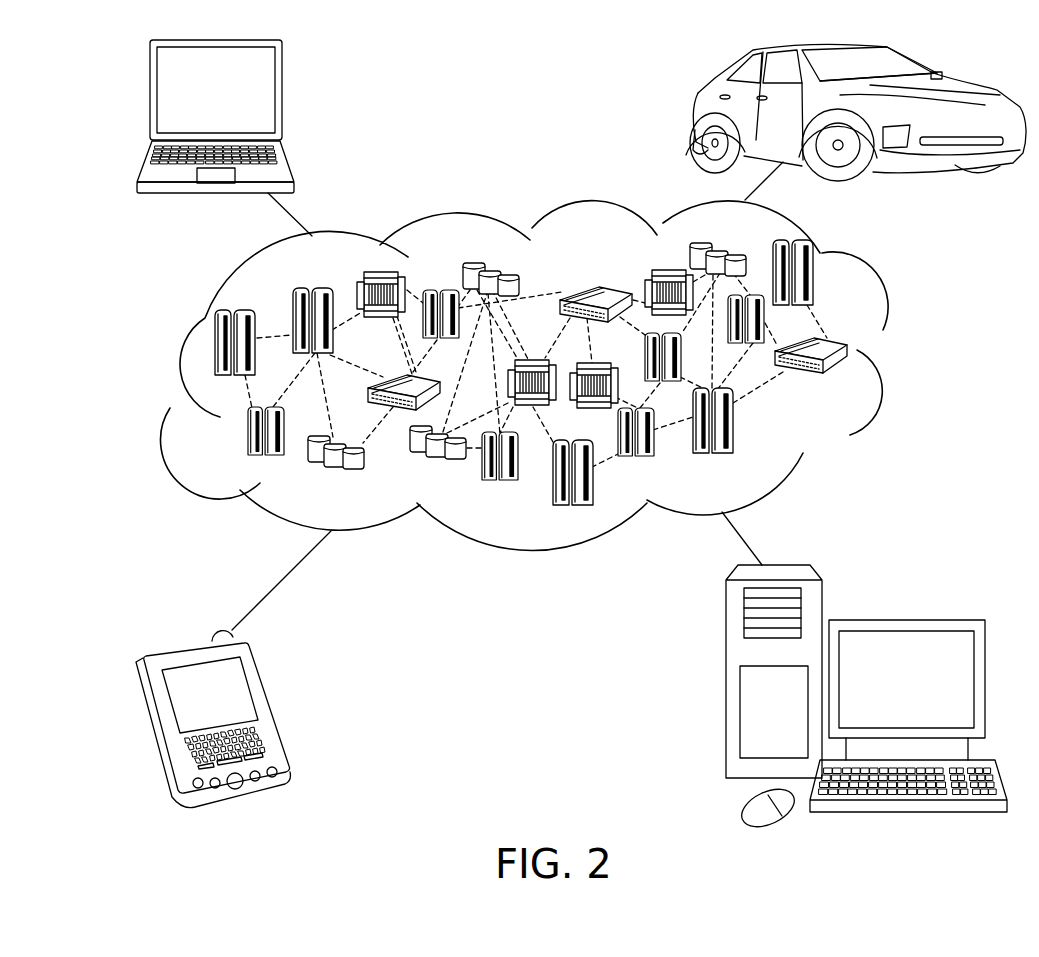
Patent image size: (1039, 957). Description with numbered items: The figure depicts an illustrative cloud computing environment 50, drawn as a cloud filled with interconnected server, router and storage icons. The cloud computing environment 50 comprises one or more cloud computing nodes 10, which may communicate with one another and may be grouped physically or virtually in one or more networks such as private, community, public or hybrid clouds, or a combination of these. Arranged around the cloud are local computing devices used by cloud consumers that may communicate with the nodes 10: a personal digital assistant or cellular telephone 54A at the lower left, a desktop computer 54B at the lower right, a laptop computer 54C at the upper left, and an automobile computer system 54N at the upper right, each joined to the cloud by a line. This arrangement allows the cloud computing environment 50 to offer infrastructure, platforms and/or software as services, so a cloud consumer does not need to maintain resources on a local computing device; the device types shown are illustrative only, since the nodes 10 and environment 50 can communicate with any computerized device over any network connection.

The cloud computing node 10 is at (849, 380).
The cloud computing environment 50 is at (561, 376).
The personal digital assistant or cellular telephone 54A is at (270, 706).
The desktop computer 54B is at (903, 619).
The laptop computer 54C is at (282, 99).
The automobile computer system 54N is at (698, 113).